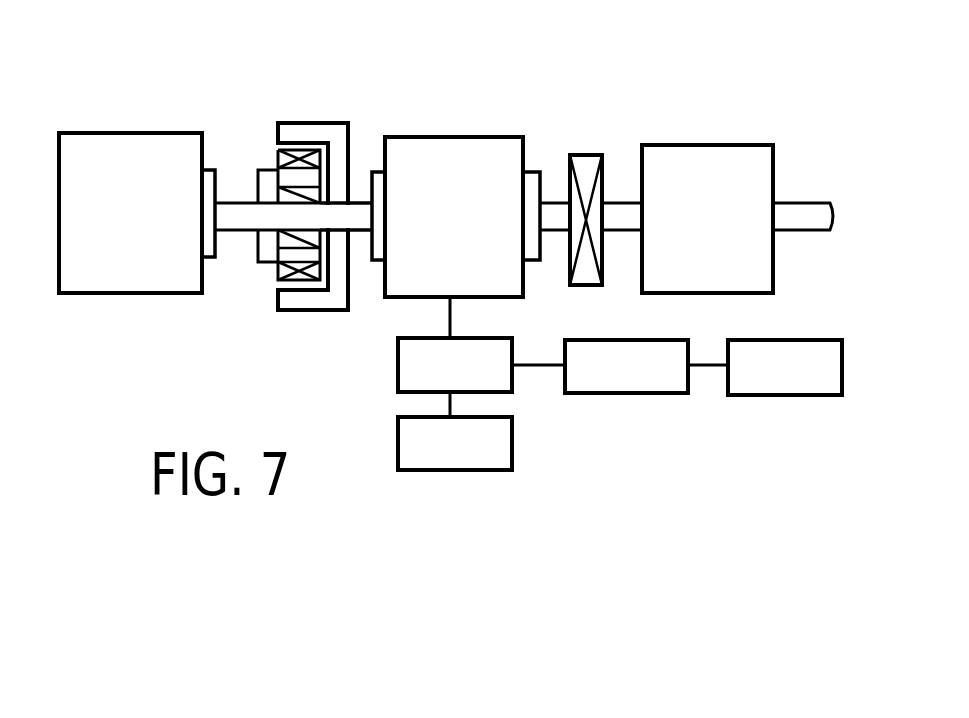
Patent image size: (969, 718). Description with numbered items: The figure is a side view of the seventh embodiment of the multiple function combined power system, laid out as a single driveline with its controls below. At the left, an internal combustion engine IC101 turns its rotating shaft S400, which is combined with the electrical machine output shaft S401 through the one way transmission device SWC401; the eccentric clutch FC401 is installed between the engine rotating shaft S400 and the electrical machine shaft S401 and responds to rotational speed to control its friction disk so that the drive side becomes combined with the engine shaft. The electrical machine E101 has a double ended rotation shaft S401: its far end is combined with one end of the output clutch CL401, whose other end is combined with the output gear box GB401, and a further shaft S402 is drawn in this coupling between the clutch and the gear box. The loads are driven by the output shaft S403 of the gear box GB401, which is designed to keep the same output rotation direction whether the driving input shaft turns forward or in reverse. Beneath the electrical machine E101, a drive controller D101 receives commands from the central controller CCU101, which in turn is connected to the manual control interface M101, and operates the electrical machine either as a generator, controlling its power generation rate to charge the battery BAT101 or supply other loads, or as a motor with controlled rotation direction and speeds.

The internal combustion engine IC101 is at (83, 148).
The rotating shaft of the engine S400 is at (233, 213).
The eccentric clutch FC401 is at (300, 110).
The one way transmission device SWC401 is at (290, 238).
The electrical machine E101 is at (422, 147).
The electrical machine output shaft S401 is at (553, 213).
The output clutch CL401 is at (582, 163).
The shaft S402 is at (625, 213).
The output gear box GB401 is at (700, 153).
The output shaft of the gear box S403 is at (792, 212).
The drive controller D101 is at (455, 344).
The central controller CCU101 is at (600, 366).
The manual control interface M101 is at (765, 367).
The battery BAT101 is at (455, 431).